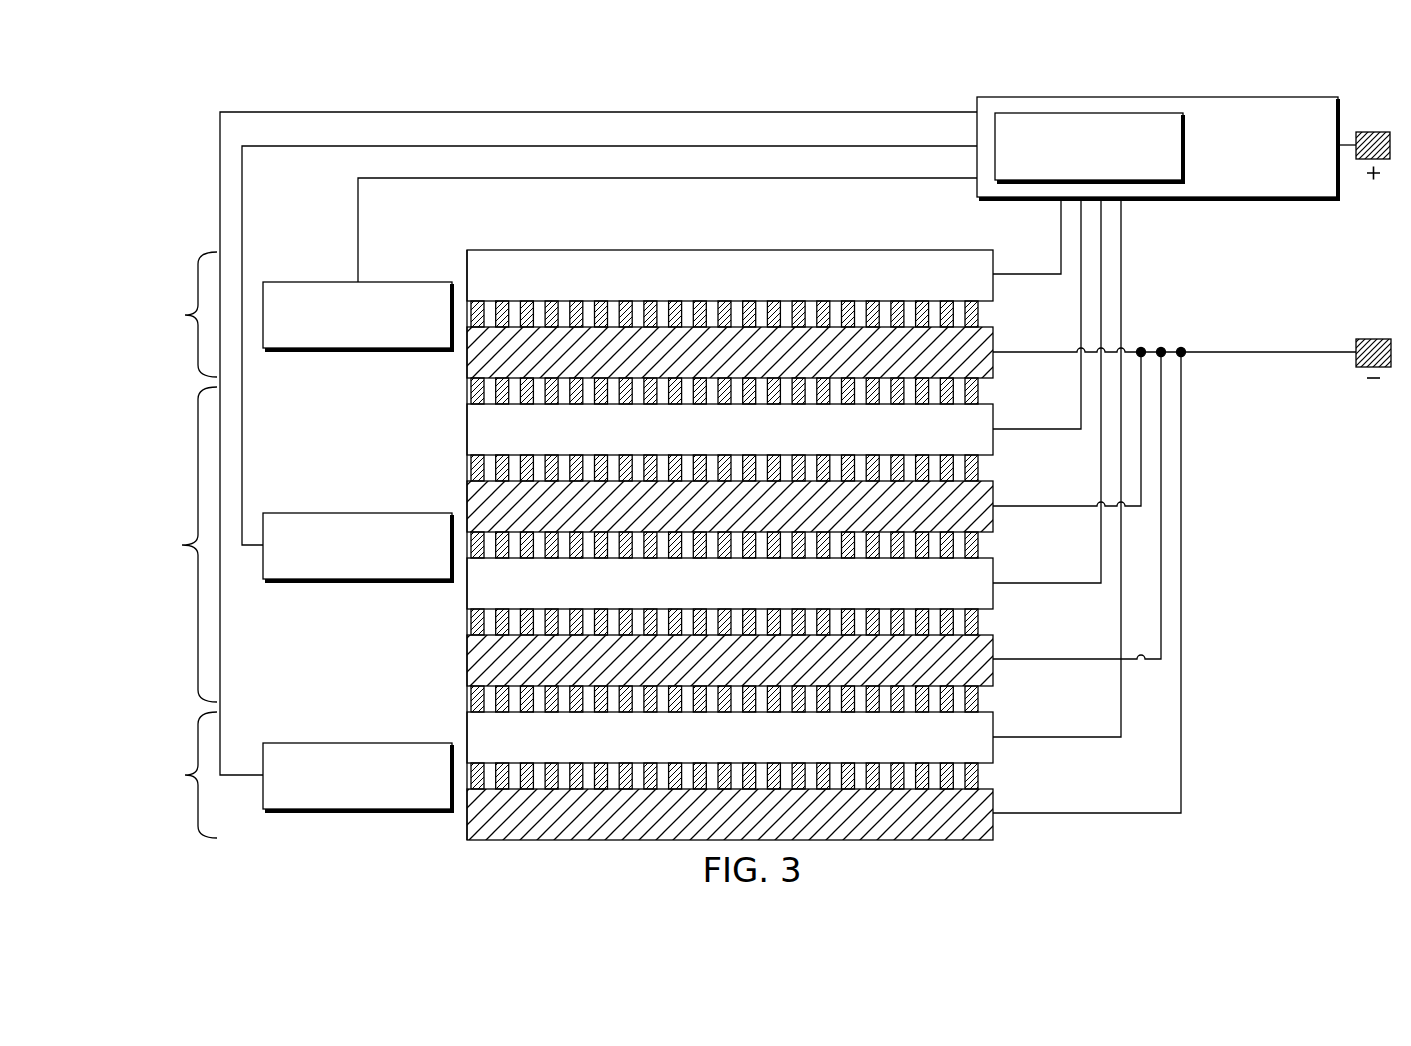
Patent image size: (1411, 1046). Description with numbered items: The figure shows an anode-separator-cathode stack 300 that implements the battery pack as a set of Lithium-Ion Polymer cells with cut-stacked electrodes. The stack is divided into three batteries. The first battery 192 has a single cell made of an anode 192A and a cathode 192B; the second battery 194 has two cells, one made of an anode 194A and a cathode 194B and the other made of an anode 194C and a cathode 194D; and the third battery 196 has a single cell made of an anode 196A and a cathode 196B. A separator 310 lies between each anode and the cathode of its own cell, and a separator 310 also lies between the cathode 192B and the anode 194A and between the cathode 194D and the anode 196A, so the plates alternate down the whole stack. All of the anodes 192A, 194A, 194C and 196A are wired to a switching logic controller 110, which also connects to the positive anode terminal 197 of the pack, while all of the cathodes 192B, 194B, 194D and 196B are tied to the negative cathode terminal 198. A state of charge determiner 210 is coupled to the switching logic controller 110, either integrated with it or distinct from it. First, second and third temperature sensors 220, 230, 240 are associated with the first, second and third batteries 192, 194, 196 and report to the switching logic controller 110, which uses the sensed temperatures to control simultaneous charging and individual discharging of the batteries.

The switching logic controller 110 is at (1162, 97).
The first battery 192 is at (197, 284).
The anode 192A is at (993, 288).
The cathode 192B is at (993, 365).
The second battery 194 is at (197, 443).
The anode 194A is at (993, 442).
The cathode 194B is at (993, 519).
The anode 194C is at (993, 596).
The cathode 194D is at (993, 673).
The third battery 196 is at (197, 743).
The anode 196A is at (993, 750).
The cathode 196B is at (993, 827).
The anode terminal 197 is at (1373, 132).
The cathode terminal 198 is at (1373, 339).
The state of charge determiner 210 is at (1088, 113).
The first temperature sensor 220 is at (360, 351).
The second temperature sensor 230 is at (360, 582).
The third temperature sensor 240 is at (360, 812).
The anode-separator-cathode stack 300 is at (543, 237).
The separator 310 is at (978, 313).